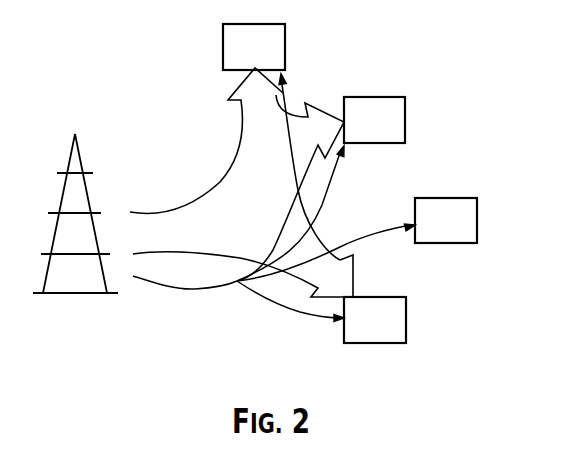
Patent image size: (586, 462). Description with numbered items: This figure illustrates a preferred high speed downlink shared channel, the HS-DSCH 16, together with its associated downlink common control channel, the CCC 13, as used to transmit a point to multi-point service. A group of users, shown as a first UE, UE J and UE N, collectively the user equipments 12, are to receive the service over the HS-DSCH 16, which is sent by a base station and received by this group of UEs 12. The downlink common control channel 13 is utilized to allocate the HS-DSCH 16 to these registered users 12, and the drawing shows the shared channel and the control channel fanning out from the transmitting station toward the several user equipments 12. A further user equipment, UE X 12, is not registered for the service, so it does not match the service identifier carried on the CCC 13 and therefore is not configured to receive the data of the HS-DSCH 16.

The user equipment (UE) 12 is at (377, 186).
The downlink common control channel (CCC) 13 is at (165, 288).
The high speed downlink shared channel (HS-DSCH) 16 is at (241, 182).